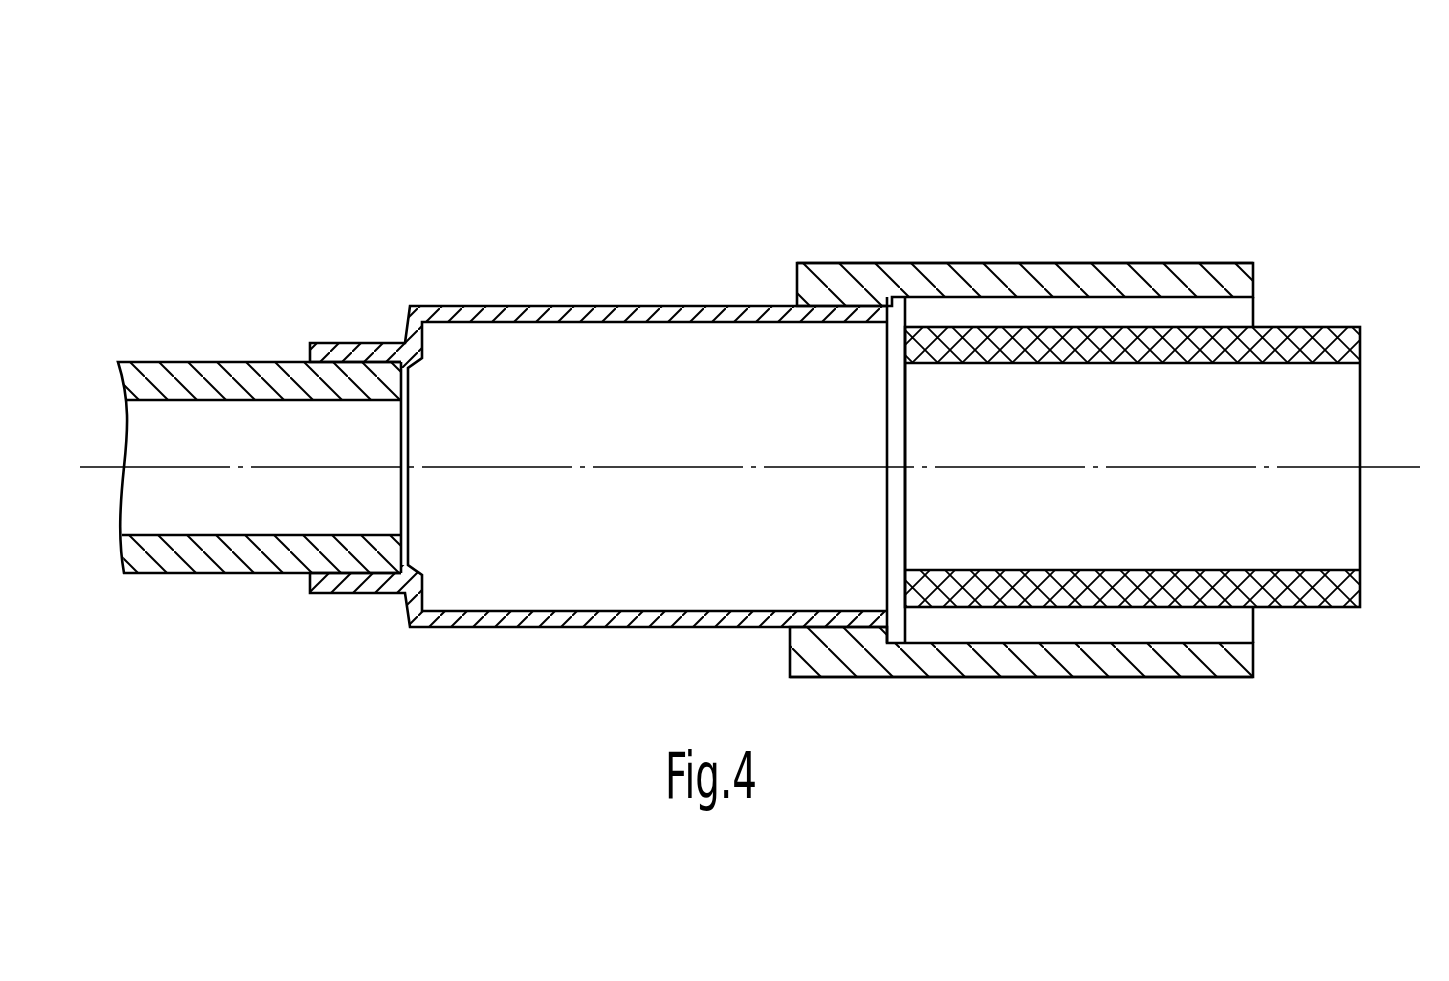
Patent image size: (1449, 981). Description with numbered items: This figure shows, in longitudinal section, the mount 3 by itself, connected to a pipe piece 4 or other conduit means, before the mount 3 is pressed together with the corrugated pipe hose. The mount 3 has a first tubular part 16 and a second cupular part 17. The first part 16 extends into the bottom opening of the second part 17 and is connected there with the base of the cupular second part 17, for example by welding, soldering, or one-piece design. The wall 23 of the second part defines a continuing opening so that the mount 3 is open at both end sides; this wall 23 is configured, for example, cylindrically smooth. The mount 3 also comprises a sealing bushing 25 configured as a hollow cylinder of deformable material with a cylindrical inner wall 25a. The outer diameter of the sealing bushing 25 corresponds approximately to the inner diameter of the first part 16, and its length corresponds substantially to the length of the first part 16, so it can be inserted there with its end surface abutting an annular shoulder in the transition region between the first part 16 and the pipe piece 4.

The pipe piece 4 is at (224, 360).
The first tubular part 16 is at (628, 300).
The second cupular part 17 is at (1020, 232).
The mount 3 is at (1197, 192).
The sealing bushing 25 is at (1286, 309).
The cylindrical inner wall 25a is at (1205, 530).
The wall of the second part 23 is at (1122, 641).